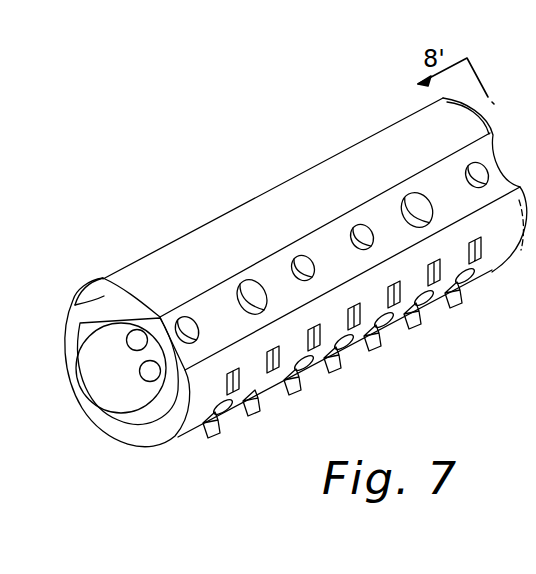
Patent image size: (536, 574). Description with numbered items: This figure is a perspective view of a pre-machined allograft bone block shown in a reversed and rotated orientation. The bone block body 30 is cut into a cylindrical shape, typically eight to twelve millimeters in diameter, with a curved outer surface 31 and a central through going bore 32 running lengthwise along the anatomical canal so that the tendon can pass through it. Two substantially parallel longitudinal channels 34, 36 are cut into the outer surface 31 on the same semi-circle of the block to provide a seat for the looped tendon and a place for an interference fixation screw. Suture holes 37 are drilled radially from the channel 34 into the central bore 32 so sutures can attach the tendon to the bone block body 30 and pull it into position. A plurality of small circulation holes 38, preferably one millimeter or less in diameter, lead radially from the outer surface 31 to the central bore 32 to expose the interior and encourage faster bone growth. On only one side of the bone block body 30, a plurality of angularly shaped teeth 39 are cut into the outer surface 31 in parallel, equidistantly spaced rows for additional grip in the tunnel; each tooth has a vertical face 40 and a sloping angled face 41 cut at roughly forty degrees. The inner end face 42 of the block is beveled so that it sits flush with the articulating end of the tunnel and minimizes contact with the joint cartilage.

The bone block body 30 is at (257, 160).
The curved outer surface 31 is at (97, 413).
The central through going bore 32 is at (98, 384).
The longitudinal channel 34 is at (205, 305).
The longitudinal channel 36 is at (88, 284).
The suture holes 37 is at (245, 283).
The circulation holes 38 is at (360, 232).
The angularly shaped teeth 39 is at (456, 306).
The vertical face 40 is at (214, 438).
The sloping angled face 41 is at (262, 398).
The inner end face 42 is at (180, 440).